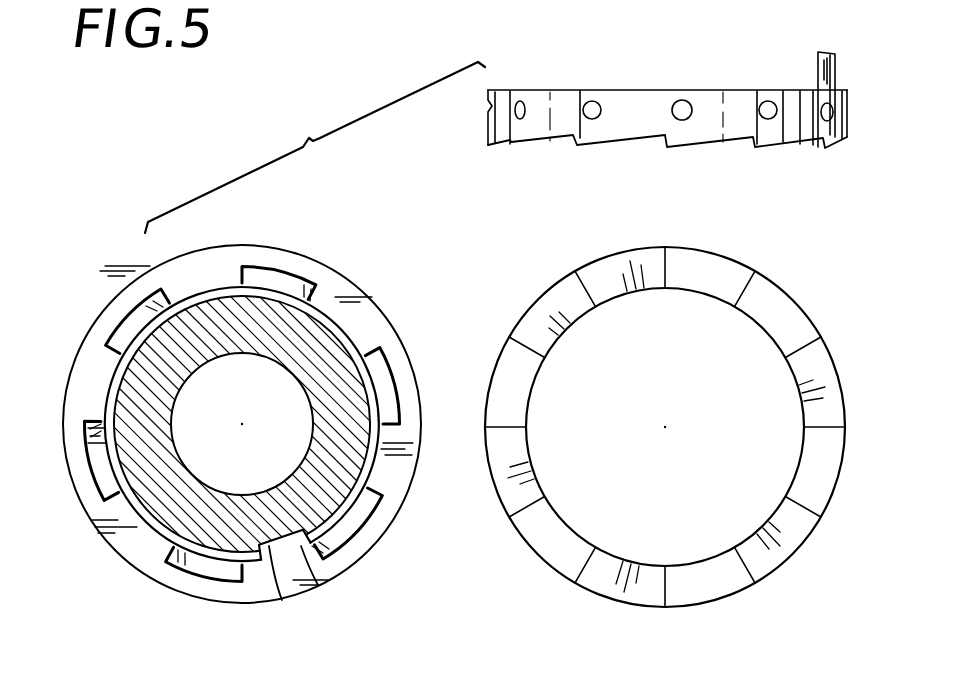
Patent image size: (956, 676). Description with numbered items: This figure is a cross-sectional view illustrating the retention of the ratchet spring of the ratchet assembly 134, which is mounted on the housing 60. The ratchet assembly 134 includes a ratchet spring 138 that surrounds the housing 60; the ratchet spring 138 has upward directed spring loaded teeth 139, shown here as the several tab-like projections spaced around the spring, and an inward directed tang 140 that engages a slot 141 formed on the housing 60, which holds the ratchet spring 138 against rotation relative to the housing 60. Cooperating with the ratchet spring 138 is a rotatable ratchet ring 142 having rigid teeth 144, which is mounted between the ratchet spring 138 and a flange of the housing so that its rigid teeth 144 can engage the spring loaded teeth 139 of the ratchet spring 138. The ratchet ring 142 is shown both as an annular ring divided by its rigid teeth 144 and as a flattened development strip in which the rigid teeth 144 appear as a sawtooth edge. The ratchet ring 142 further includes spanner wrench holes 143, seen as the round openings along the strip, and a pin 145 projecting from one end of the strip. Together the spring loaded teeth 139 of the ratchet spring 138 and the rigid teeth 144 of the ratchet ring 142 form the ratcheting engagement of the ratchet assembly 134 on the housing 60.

The housing 60 is at (327, 308).
The ratchet assembly 134 is at (301, 128).
The ratchet spring 138 is at (115, 553).
The spring loaded teeth 139 is at (397, 366).
The tang 140 is at (281, 553).
The slot 141 is at (303, 532).
The ratchet ring 142 is at (550, 88).
The spanner wrench holes 143 is at (688, 108).
The rigid teeth 144 is at (665, 140).
The pin 145 is at (817, 67).